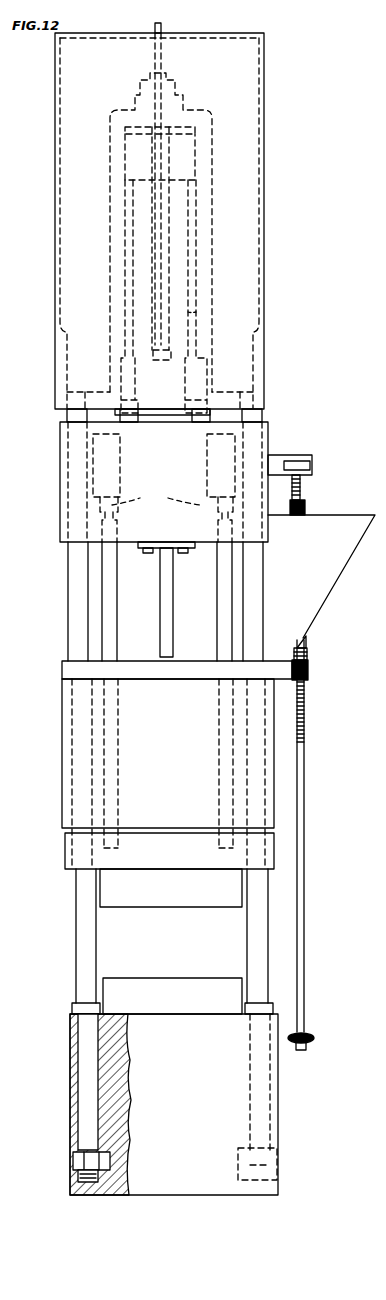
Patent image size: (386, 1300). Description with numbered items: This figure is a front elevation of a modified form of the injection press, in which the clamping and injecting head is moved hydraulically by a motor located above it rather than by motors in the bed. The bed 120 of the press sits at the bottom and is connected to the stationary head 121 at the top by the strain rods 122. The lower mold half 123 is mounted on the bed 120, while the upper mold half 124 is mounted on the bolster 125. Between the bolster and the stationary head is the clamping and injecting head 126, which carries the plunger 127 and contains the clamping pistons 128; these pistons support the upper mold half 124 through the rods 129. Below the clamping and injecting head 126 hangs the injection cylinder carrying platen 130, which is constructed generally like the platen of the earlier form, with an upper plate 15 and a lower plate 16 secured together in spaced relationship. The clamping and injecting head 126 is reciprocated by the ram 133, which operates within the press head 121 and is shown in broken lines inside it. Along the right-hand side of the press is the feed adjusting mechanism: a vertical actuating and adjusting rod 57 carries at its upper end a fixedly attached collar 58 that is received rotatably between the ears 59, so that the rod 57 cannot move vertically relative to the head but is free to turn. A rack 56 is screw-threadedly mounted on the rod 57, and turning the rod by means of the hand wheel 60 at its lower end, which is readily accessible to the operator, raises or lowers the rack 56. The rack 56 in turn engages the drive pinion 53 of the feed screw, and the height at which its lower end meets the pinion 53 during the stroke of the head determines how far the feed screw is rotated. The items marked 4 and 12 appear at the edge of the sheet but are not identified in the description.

The frame 4 is at (362, 538).
The support 12 is at (380, 111).
The upper plate 15 is at (204, 673).
The lower plate 16 is at (308, 655).
The drive pinion 53 is at (309, 672).
The rack 56 is at (307, 641).
The actuating and adjusting rod 57 is at (305, 778).
The collar 58 is at (292, 464).
The ears 59 is at (312, 472).
The hand wheel 60 is at (312, 1043).
The bed 120 is at (190, 1122).
The stationary head 121 is at (266, 381).
The strain rods 122 is at (76, 945).
The lower mold half 123 is at (186, 1006).
The upper mold half 124 is at (171, 888).
The bolster 125 is at (169, 851).
The clamping and injecting head 126 is at (164, 456).
The plunger 127 is at (172, 598).
The clamping pistons 128 is at (156, 498).
The rods 129 is at (112, 652).
The injection cylinder carrying platen 130 is at (170, 753).
The ram 133 is at (207, 312).